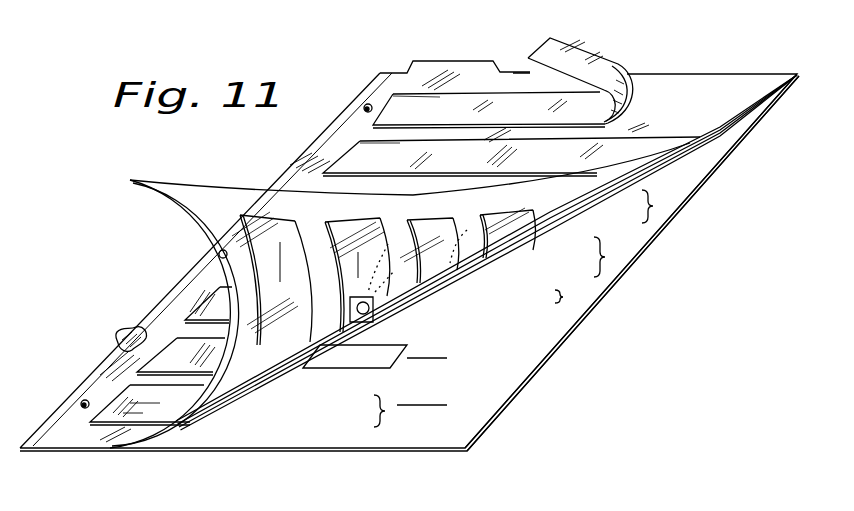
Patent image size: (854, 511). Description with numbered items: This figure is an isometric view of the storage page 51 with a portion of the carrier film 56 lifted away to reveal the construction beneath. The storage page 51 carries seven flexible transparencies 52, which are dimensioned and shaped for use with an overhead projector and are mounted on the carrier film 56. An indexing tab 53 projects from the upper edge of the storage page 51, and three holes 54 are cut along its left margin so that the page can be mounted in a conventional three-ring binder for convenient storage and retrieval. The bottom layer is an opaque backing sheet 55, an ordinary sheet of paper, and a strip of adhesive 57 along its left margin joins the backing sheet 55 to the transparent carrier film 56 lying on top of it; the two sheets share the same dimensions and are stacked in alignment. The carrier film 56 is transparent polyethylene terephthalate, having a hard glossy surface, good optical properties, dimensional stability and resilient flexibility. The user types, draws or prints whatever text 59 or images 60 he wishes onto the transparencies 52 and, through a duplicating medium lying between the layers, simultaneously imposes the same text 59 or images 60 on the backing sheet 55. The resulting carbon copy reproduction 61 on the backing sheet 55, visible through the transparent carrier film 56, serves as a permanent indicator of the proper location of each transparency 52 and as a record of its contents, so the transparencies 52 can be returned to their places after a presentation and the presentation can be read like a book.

The storage page 51 is at (741, 74).
The flexible transparencies 52 is at (352, 152).
The indexing tab 53 is at (497, 61).
The holes 54 is at (365, 105).
The opaque backing sheet 55 is at (722, 175).
The carrier film 56 is at (202, 190).
The strip of adhesive 57 is at (597, 58).
The text 59 is at (440, 97).
The images 60 is at (408, 274).
The carbon copy reproduction 61 is at (653, 207).